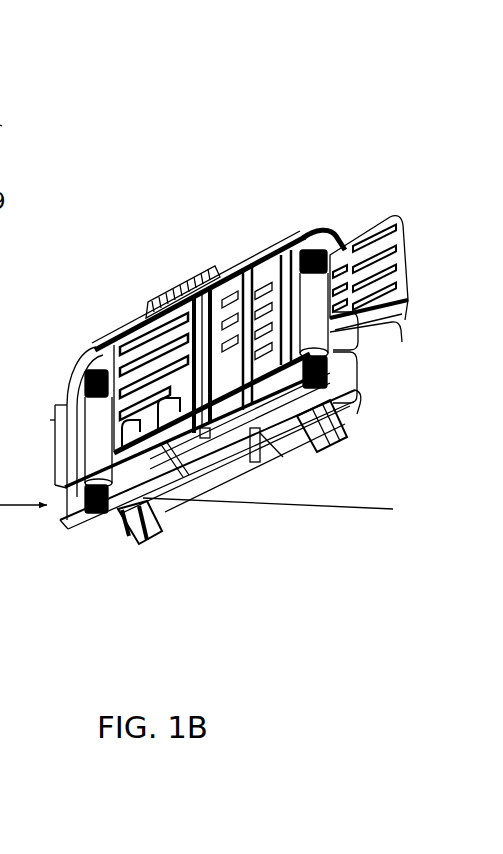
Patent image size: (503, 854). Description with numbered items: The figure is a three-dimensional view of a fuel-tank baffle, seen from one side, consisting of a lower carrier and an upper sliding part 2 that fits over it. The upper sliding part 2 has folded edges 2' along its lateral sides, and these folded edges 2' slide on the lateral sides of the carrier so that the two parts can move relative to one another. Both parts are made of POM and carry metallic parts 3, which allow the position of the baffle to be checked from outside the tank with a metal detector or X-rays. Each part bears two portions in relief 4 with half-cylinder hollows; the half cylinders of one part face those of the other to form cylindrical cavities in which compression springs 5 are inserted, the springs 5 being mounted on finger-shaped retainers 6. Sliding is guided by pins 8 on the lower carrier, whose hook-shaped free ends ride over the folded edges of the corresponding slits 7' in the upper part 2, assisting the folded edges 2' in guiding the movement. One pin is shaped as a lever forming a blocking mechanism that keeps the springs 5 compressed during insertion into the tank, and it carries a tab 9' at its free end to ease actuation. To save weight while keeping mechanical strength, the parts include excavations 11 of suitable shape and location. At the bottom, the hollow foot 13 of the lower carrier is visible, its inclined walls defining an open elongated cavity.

The upper sliding part 2 is at (172, 289).
The folded edges 2' is at (27, 366).
The metallic parts 3 is at (163, 536).
The portions in relief 4 is at (293, 315).
The compression springs 5 is at (345, 421).
The retainers 6 is at (130, 530).
The slits 7' is at (206, 335).
The pins 8 is at (300, 328).
The tab 9' is at (12, 188).
The excavations 11 is at (392, 215).
The hollow foot 13 is at (228, 482).